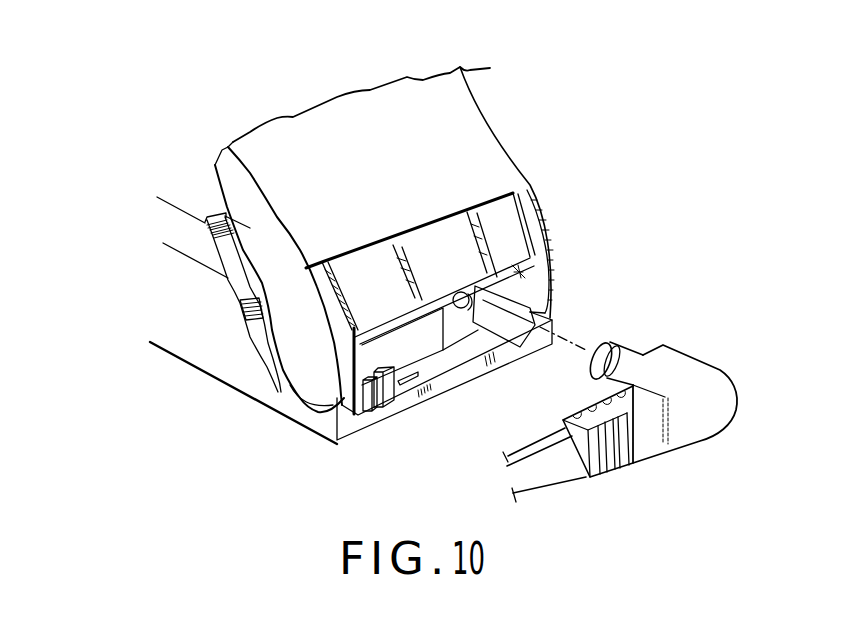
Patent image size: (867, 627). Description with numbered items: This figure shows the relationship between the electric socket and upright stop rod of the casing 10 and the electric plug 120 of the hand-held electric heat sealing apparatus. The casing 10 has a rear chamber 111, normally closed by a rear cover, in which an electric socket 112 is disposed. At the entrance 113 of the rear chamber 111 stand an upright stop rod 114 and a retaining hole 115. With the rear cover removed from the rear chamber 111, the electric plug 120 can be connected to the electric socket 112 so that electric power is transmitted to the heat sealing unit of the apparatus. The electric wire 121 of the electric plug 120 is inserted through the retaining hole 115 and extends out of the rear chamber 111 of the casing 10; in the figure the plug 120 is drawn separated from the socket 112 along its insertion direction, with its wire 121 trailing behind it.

The casing 10 is at (213, 386).
The rear chamber 111 is at (478, 343).
The electric socket 112 is at (507, 333).
The entrance 113 is at (447, 391).
The upright stop rod 114 is at (390, 400).
The retaining hole 115 is at (369, 411).
The electric plug 120 is at (693, 352).
The electric wire 121 is at (547, 470).